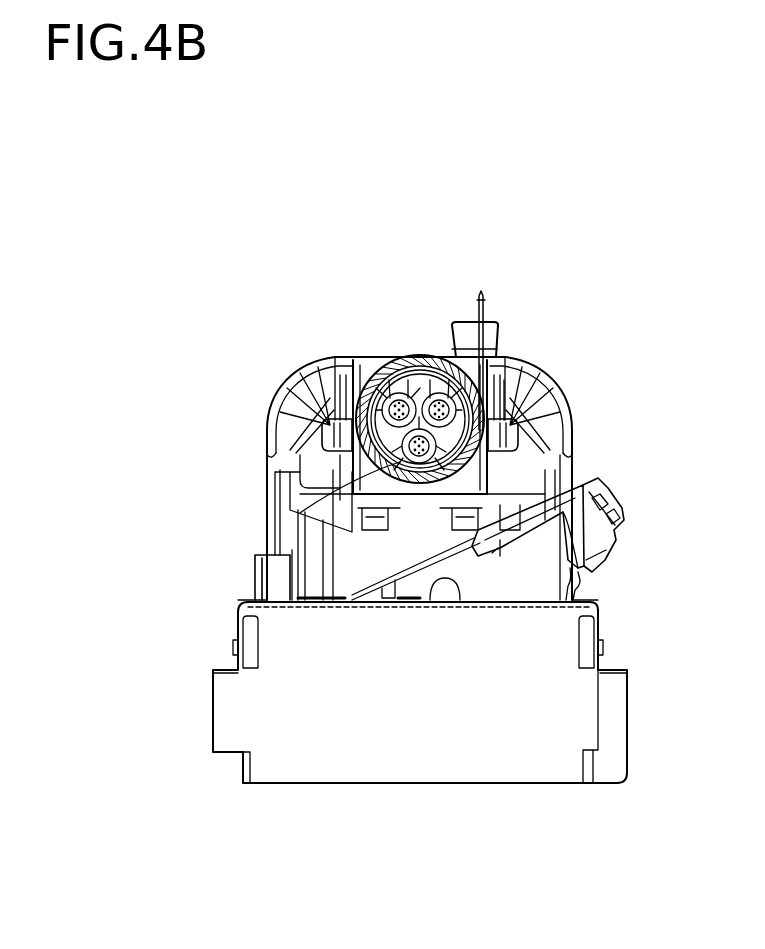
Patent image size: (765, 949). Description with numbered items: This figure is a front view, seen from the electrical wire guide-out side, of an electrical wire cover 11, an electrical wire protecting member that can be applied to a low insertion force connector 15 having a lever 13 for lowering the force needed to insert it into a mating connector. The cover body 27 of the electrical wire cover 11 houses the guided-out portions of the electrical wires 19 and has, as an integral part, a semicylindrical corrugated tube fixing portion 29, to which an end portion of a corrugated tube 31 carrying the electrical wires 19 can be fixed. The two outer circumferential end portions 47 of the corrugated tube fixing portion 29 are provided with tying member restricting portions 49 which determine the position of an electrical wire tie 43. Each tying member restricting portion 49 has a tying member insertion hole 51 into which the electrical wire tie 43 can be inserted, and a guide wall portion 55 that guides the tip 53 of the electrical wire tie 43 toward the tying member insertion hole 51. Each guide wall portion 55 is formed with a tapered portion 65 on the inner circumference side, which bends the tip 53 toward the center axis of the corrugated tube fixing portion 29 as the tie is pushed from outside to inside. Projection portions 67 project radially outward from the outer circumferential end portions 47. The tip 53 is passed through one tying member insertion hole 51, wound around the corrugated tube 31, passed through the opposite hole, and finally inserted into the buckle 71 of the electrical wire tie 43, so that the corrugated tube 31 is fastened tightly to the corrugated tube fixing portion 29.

The electrical wire cover 11 is at (588, 410).
The lever 13 is at (626, 504).
The low insertion force connector 15 is at (264, 800).
The electrical wires 19 is at (440, 394).
The cover body 27 is at (391, 352).
The corrugated tube fixing portion 29 is at (507, 395).
The corrugated tube 31 is at (372, 374).
The electrical wire tie 43 is at (491, 299).
The outer circumferential end portions 47 is at (333, 396).
The tying member restricting portions 49 is at (318, 457).
The tying member insertion hole 51 is at (336, 392).
The tip 53 is at (477, 298).
The guide wall portion 55 is at (378, 498).
The tapered portion 65 is at (350, 512).
The projection portions 67 is at (322, 432).
The buckle 71 is at (487, 336).